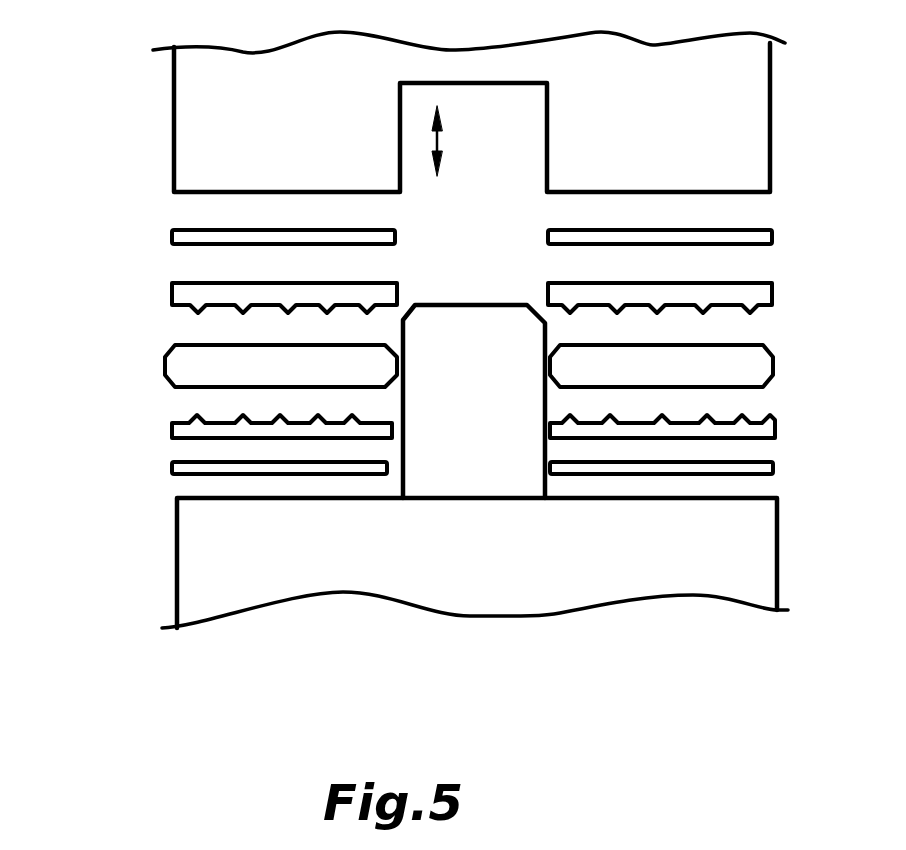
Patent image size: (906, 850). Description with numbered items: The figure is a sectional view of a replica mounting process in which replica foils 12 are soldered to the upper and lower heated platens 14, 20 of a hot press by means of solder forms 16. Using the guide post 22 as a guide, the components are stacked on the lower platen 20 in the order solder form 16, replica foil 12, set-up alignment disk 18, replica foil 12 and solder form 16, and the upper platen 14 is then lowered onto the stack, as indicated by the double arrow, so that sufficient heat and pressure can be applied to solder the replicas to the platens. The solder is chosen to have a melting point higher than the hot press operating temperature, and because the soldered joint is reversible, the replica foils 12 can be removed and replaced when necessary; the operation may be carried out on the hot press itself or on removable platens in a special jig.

The replica foil 12 is at (172, 292).
The upper heated platen 14 is at (180, 109).
The solder form 16 is at (172, 237).
The set-up alignment disk 18 is at (165, 366).
The lower heated platen 20 is at (197, 550).
The guide post 22 is at (472, 475).